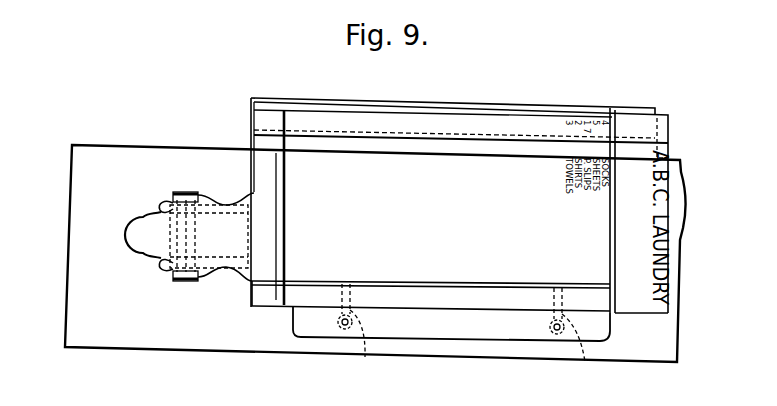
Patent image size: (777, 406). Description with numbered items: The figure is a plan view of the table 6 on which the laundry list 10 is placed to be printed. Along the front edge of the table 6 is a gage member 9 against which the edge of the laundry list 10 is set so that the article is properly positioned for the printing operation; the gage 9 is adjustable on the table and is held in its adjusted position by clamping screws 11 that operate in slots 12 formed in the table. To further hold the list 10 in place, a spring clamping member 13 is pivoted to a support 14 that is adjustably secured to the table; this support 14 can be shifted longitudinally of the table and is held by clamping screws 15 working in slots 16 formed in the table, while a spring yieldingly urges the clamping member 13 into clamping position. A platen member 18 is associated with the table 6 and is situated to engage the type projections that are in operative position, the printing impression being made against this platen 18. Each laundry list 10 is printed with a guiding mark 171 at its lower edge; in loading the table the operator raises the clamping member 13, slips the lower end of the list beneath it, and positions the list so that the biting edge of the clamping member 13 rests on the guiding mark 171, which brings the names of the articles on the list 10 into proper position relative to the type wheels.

The table 6 is at (242, 332).
The gage member 9 is at (410, 328).
The laundry list 10 is at (293, 295).
The clamping screws 11 is at (343, 327).
The slots 12 is at (474, 334).
The spring clamping member 13 is at (263, 257).
The support 14 is at (183, 192).
The clamping screws 15 is at (180, 201).
The slots 16 is at (220, 207).
The guiding mark 171 is at (273, 172).
The platen member 18 is at (251, 120).